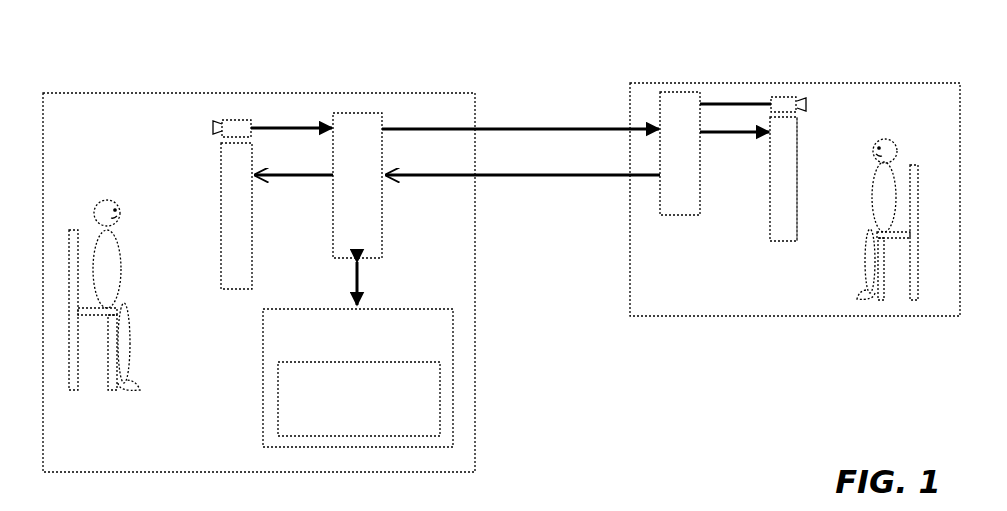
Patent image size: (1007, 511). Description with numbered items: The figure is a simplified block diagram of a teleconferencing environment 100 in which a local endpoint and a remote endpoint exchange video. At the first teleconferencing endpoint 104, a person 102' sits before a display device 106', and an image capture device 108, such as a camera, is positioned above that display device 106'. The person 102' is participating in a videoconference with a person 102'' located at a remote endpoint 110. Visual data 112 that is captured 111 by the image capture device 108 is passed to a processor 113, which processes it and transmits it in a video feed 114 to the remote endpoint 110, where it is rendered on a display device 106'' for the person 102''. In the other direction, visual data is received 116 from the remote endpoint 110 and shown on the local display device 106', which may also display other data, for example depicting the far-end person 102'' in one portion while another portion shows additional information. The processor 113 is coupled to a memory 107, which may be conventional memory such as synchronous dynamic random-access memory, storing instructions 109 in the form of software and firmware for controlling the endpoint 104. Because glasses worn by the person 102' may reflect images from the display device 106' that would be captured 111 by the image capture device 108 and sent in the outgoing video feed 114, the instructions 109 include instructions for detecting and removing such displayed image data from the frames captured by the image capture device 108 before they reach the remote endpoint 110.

The teleconferencing environment 100 is at (544, 33).
The first teleconferencing endpoint 104 is at (125, 93).
The person 102' is at (94, 265).
The display device 106' is at (204, 244).
The image capture device 108 is at (234, 120).
The captured 111 is at (186, 130).
The visual data 112 is at (284, 128).
The processor 113 is at (368, 113).
The video feed 114 is at (490, 129).
The received 116 is at (270, 175).
The memory 107 is at (373, 358).
The instructions 109 is at (375, 418).
The remote endpoint 110 is at (855, 83).
The display device 106'' is at (747, 200).
The person 102'' is at (902, 200).